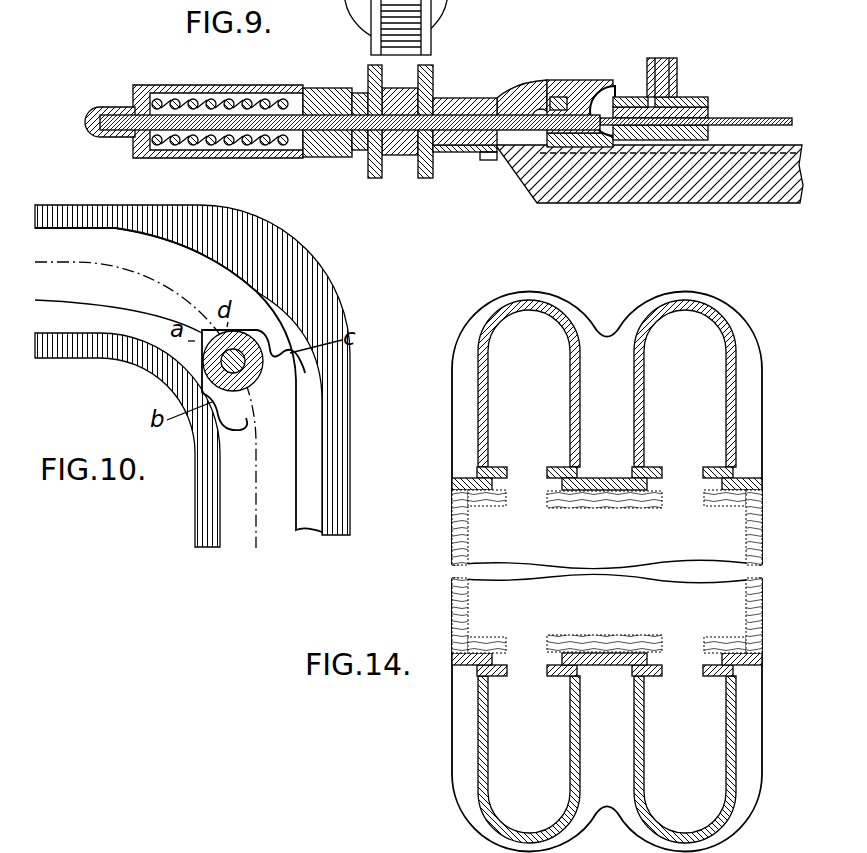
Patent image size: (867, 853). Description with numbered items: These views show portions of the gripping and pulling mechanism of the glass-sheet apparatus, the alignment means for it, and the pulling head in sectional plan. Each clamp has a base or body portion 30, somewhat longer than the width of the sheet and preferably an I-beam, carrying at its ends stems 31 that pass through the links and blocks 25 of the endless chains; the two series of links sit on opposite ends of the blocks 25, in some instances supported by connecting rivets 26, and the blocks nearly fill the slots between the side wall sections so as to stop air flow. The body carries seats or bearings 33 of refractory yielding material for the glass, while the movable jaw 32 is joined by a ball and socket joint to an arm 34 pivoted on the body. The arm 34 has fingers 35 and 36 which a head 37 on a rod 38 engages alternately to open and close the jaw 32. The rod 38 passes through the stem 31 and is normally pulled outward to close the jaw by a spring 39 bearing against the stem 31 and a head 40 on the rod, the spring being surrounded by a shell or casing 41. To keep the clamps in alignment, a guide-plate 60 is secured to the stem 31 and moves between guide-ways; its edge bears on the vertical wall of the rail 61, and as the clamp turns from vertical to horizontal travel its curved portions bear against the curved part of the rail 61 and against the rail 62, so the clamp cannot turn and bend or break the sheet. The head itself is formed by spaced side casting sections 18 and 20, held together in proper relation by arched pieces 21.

In FIG. 14, the side casting section 18 is at (550, 467).
In FIG. 14, the side casting section 20 is at (462, 476).
In FIG. 14, the arched piece 21 is at (472, 423).
In FIG. 9, the block 25 is at (401, 157).
In FIG. 9, the connecting rivet 26 is at (450, 10).
In FIG. 9, the base or body portion 30 is at (707, 197).
In FIG. 9, the stem 31 is at (445, 152).
In FIG. 9, the jaw 32 is at (705, 98).
In FIG. 9, the seat or bearing 33 is at (710, 120).
In FIG. 9, the arm 34 is at (623, 83).
In FIG. 9, the finger 35 is at (497, 97).
In FIG. 9, the finger 36 is at (561, 133).
In FIG. 9, the head 37 is at (534, 111).
In FIG. 9, the rod 38 is at (450, 100).
In FIG. 9, the spring 39 is at (288, 100).
In FIG. 9, the head 40 is at (113, 107).
In FIG. 9, the shell or casing 41 is at (222, 90).
In FIG. 10, the guide-plate 60 is at (270, 340).
In FIG. 10, the guide-way or rail 61 is at (203, 498).
In FIG. 10, the rail 62 is at (323, 385).